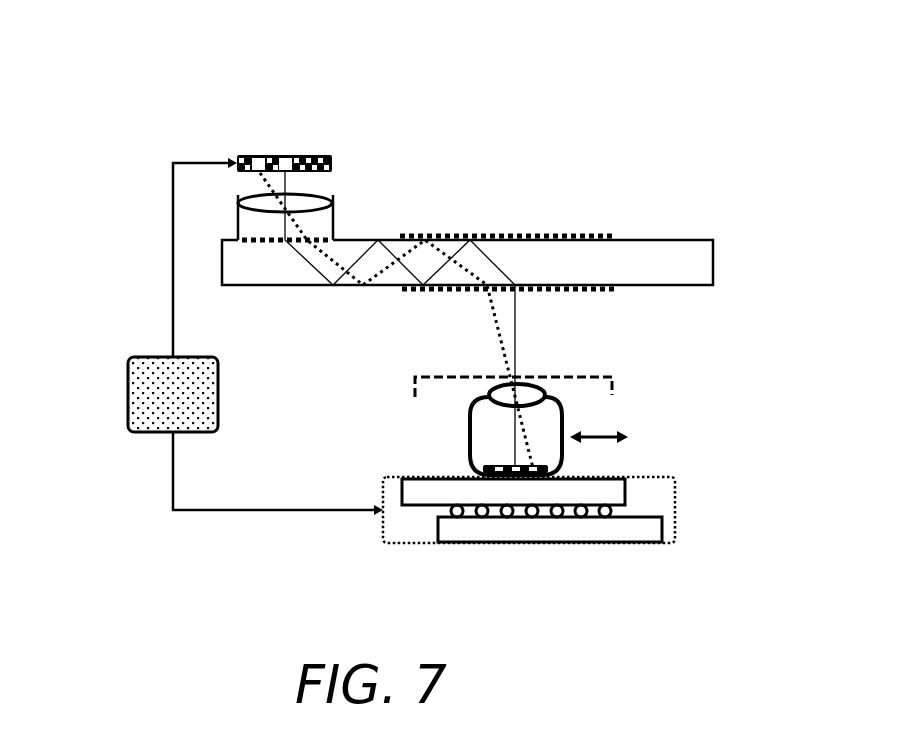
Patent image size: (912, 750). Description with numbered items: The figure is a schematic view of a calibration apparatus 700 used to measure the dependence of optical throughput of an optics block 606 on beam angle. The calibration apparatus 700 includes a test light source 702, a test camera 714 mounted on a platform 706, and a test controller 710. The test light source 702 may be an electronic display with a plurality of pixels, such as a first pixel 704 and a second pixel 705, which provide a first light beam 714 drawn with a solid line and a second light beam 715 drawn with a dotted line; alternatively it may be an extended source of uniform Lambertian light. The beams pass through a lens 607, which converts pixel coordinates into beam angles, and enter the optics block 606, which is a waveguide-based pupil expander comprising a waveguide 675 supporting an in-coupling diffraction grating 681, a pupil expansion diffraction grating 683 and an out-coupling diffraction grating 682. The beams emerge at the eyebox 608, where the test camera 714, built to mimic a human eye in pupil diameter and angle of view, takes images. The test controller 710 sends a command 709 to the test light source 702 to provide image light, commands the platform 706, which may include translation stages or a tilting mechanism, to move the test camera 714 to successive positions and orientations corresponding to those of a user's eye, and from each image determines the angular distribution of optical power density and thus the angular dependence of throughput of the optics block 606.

The calibration apparatus 700 is at (86, 354).
The test light source 702 is at (322, 155).
The first pixel 704 is at (285, 155).
The second pixel 705 is at (253, 155).
The lens 607 is at (238, 203).
The command 709 is at (173, 255).
The test controller 710 is at (218, 393).
The in-coupling diffraction grating 681 is at (257, 248).
The test camera 714 is at (393, 240).
The second light beam 715 is at (446, 250).
The pupil expansion diffraction grating 683 is at (495, 236).
The out-coupling diffraction grating 682 is at (560, 289).
The waveguide 675 is at (627, 240).
The optics block 606 is at (647, 292).
The eyebox 608 is at (613, 395).
The platform 706 is at (675, 505).